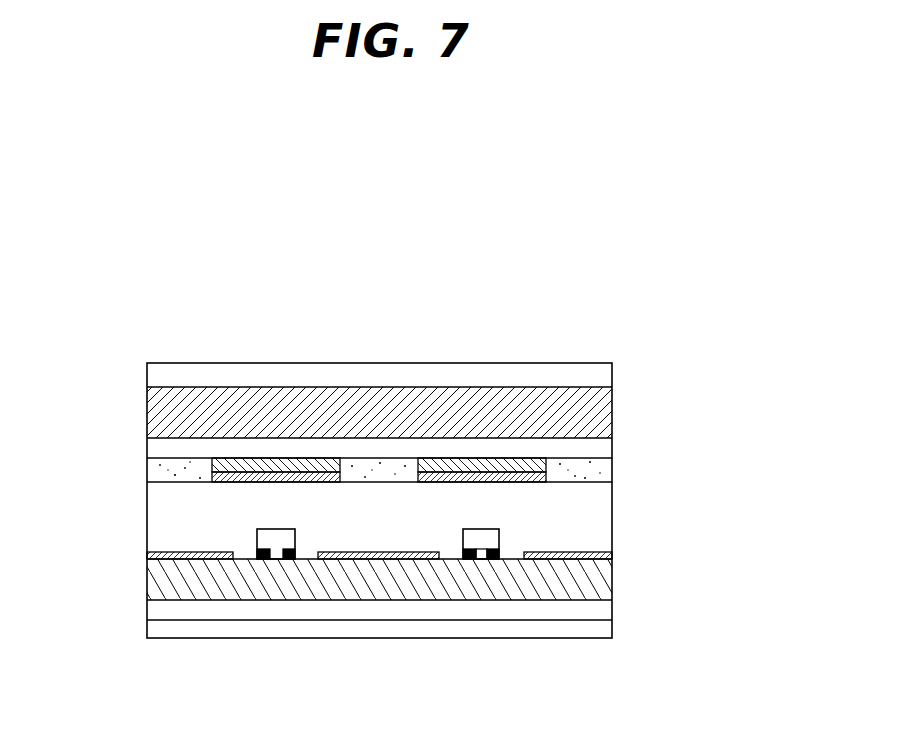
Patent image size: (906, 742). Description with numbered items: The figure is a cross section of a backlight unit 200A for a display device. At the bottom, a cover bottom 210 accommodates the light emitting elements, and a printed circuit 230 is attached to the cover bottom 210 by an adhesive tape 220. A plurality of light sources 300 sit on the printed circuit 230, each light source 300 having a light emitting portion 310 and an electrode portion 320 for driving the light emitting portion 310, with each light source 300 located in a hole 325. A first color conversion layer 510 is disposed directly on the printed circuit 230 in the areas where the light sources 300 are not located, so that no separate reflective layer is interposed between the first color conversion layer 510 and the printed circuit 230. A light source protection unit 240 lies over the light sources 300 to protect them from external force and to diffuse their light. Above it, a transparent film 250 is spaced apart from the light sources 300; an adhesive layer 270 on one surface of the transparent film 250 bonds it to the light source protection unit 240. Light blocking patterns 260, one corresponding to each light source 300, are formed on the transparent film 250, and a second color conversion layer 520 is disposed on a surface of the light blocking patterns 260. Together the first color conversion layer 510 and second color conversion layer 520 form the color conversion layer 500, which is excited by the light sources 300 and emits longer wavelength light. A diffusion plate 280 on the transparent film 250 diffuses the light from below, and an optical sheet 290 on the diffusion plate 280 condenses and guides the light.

The backlight unit 200A is at (200, 327).
The cover bottom 210 is at (612, 628).
The adhesive tape 220 is at (612, 607).
The printed circuit 230 is at (612, 578).
The light source protection unit 240 is at (147, 503).
The transparent film 250 is at (612, 448).
The light blocking pattern 260 is at (210, 468).
The adhesive layer 270 is at (147, 470).
The diffusion plate 280 is at (612, 414).
The optical sheet 290 is at (612, 376).
The light source 300 is at (524, 690).
The light emitting portion 310 is at (479, 541).
The electrode portion 320 is at (492, 552).
The hole 325 is at (452, 549).
The color conversion layer 500 is at (688, 497).
The first color conversion layer 510 is at (612, 553).
The second color conversion layer 520 is at (540, 482).